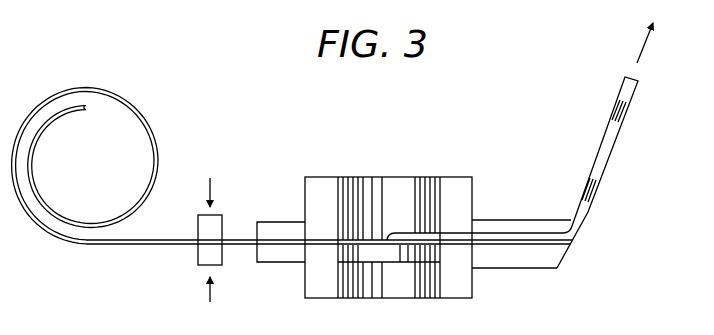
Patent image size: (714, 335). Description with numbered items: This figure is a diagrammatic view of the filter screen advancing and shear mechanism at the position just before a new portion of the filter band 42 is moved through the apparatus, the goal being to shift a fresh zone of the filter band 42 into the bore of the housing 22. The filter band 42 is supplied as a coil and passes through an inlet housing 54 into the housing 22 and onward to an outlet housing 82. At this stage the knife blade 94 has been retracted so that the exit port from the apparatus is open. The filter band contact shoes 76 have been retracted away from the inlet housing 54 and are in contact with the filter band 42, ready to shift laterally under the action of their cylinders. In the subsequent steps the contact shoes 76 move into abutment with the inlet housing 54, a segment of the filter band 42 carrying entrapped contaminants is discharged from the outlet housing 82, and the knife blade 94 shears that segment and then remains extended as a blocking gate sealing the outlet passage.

The housing 22 is at (322, 176).
The filter band 42 is at (126, 247).
The inlet housing 54 is at (282, 262).
The filter band contact shoes 76 is at (198, 228).
The outlet housing 82 is at (510, 270).
The knife blade 94 is at (612, 150).